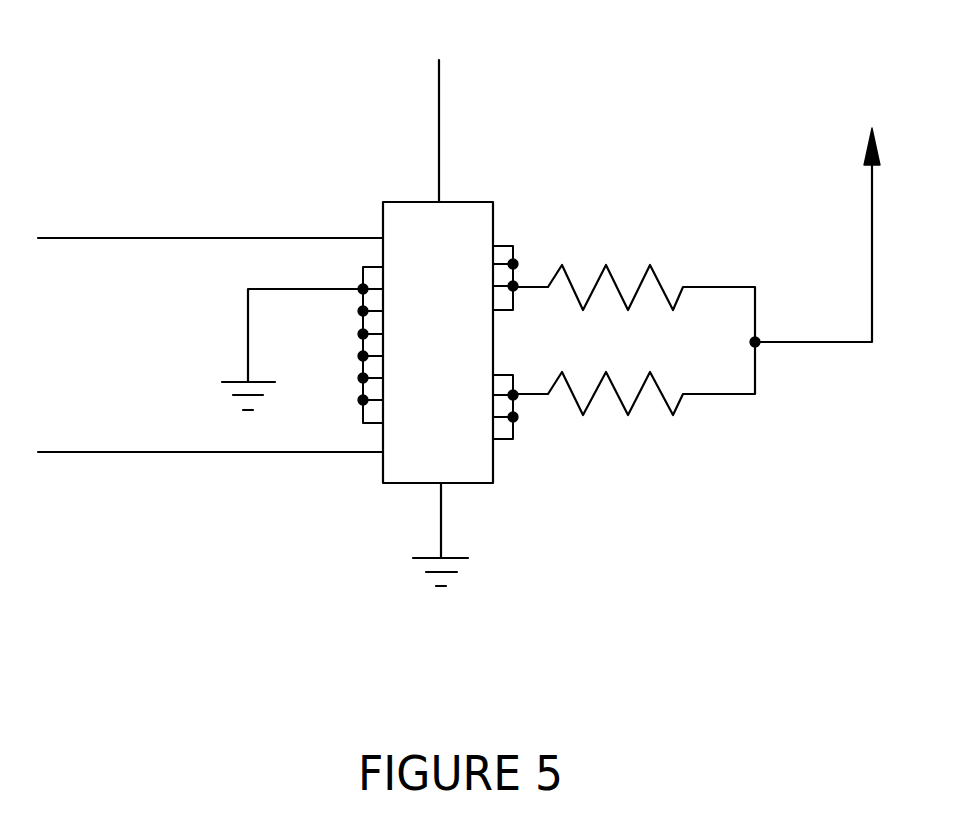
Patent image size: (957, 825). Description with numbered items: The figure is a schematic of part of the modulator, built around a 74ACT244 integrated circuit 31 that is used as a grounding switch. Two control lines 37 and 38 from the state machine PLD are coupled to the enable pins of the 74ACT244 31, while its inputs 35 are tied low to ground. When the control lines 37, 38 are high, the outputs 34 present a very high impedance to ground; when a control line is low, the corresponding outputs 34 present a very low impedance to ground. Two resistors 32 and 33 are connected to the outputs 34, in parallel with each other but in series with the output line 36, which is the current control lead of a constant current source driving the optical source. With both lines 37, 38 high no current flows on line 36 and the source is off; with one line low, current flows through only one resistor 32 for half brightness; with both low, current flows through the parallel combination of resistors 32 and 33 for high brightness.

The 74ACT244 integrated circuit 31 is at (403, 196).
The resistor 32 is at (627, 252).
The resistor 33 is at (630, 428).
The outputs 34 is at (518, 258).
The grounded inputs 35 is at (322, 296).
The output line 36 is at (865, 217).
The control line 37 is at (136, 230).
The control line 38 is at (136, 447).